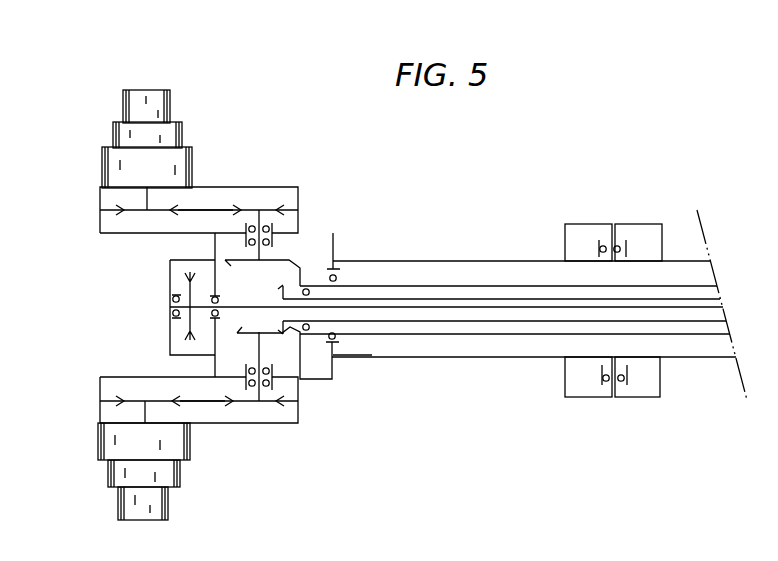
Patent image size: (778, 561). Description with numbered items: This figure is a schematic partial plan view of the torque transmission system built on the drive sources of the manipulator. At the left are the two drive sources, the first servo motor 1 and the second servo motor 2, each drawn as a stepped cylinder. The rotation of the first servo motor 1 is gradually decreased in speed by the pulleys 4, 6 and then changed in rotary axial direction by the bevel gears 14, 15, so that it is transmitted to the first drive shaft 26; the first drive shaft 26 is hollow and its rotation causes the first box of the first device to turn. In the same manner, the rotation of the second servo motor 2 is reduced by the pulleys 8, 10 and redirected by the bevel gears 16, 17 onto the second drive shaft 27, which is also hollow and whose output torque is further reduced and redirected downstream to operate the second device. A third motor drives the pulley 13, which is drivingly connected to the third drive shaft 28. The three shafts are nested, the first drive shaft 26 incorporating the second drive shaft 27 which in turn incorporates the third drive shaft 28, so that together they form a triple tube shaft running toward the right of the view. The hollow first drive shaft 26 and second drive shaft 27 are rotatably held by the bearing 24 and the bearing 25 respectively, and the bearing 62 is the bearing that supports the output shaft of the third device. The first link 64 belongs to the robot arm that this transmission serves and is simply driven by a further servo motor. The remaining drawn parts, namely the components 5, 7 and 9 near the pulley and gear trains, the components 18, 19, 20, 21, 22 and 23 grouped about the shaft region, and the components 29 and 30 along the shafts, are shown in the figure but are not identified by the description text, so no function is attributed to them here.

The first servo motor 1 is at (165, 104).
The second servo motor 2 is at (112, 440).
The pulley 4 is at (157, 207).
The connecting rod 5 is at (207, 207).
The pulley 6 is at (272, 207).
The upper housing 7 is at (298, 187).
The pulley 8 is at (162, 402).
The lower connecting rod 9 is at (207, 402).
The pulley 10 is at (247, 403).
The pulley 13 is at (188, 330).
The bevel gear 14 is at (305, 257).
The bevel gear 15 is at (287, 325).
The bevel gear 16 is at (275, 337).
The bevel gear 17 is at (372, 355).
The upper guide roller 18 is at (272, 230).
The upper guide roller 19 is at (272, 242).
The lower guide roller 20 is at (272, 372).
The lower guide roller 21 is at (268, 388).
The guide roller pair 22 is at (173, 313).
The guide roller pair 23 is at (212, 300).
The bearing 24 is at (338, 277).
The bearing 25 is at (336, 330).
The first drive shaft 26 is at (472, 286).
The second drive shaft 27 is at (502, 299).
The third drive shaft 28 is at (535, 313).
The upper guide block 29 is at (618, 245).
The lower guide block 30 is at (620, 387).
The bearing 62 is at (102, 407).
The first link 64 is at (660, 399).